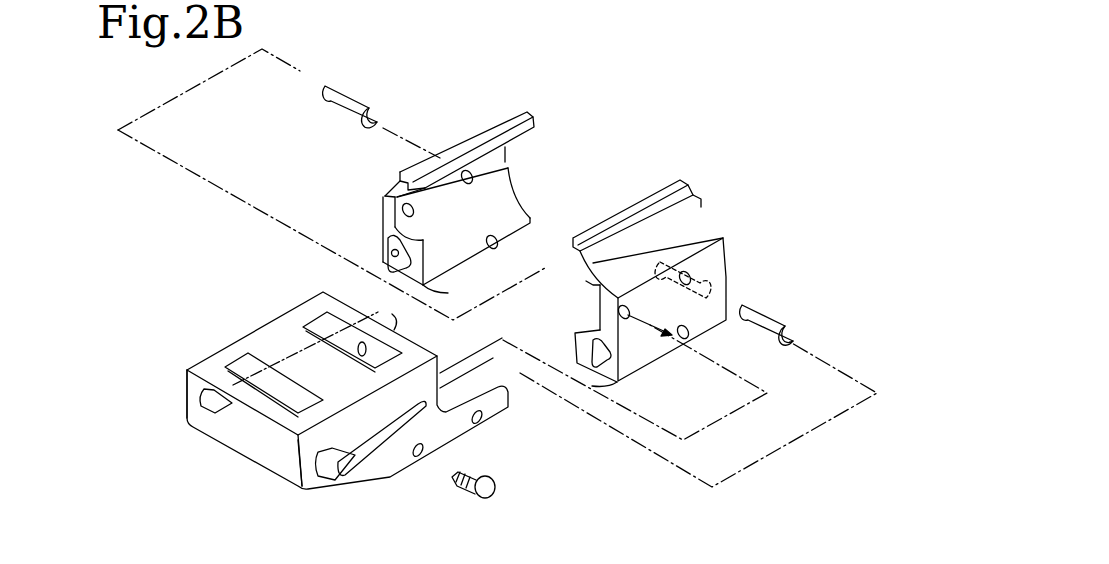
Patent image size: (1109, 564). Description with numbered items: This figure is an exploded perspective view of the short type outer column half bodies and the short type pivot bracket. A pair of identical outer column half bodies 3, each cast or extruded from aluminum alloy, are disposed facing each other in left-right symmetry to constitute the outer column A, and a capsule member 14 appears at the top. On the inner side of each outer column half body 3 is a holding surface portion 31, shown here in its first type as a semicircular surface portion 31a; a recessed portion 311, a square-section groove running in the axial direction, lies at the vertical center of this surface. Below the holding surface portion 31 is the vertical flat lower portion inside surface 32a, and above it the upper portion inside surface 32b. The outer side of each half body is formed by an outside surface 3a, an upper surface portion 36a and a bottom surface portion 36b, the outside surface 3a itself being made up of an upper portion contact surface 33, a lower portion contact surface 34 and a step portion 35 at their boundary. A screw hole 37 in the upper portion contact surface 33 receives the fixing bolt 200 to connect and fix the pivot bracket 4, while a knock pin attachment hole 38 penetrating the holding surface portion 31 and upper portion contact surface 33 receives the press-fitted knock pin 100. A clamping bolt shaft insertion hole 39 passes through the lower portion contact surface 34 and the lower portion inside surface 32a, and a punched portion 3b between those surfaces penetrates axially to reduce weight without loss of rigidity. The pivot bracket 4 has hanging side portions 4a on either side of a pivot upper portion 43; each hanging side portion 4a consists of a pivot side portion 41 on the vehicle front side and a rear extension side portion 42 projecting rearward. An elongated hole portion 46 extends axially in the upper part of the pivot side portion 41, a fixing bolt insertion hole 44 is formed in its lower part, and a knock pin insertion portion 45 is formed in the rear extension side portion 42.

The outer column A is at (753, 187).
The capsule member 14 is at (679, 0).
The knock pin 100 is at (360, 108).
The outer column half body 3 is at (546, 246).
The outside surface 3a is at (786, 203).
The punched portion 3b is at (345, 264).
The holding surface portion 31 is at (513, 207).
The semicircular surface portion 31a is at (520, 188).
The recessed portion 311 is at (385, 206).
The lower portion inside surface 32a is at (463, 257).
The upper portion inside surface 32b is at (535, 120).
The upper portion contact surface 33 is at (383, 192).
The lower portion contact surface 34 is at (392, 254).
The step portion 35 is at (382, 216).
The upper surface portion 36a is at (397, 190).
The bottom surface portion 36b is at (417, 288).
The screw hole 37 is at (392, 250).
The knock pin attachment hole 38 is at (488, 162).
The clamping bolt shaft insertion hole 39 is at (498, 246).
The pivot bracket 4 is at (345, 404).
The hanging side portion 4a is at (227, 418).
The pivot side portion 41 is at (187, 403).
The rear extension side portion 42 is at (398, 318).
The pivot upper portion 43 is at (205, 385).
The fixing bolt insertion hole 44 is at (420, 458).
The knock pin insertion portion 45 is at (483, 423).
The elongated hole portion 46 is at (357, 445).
The fixing bolt 200 is at (496, 490).